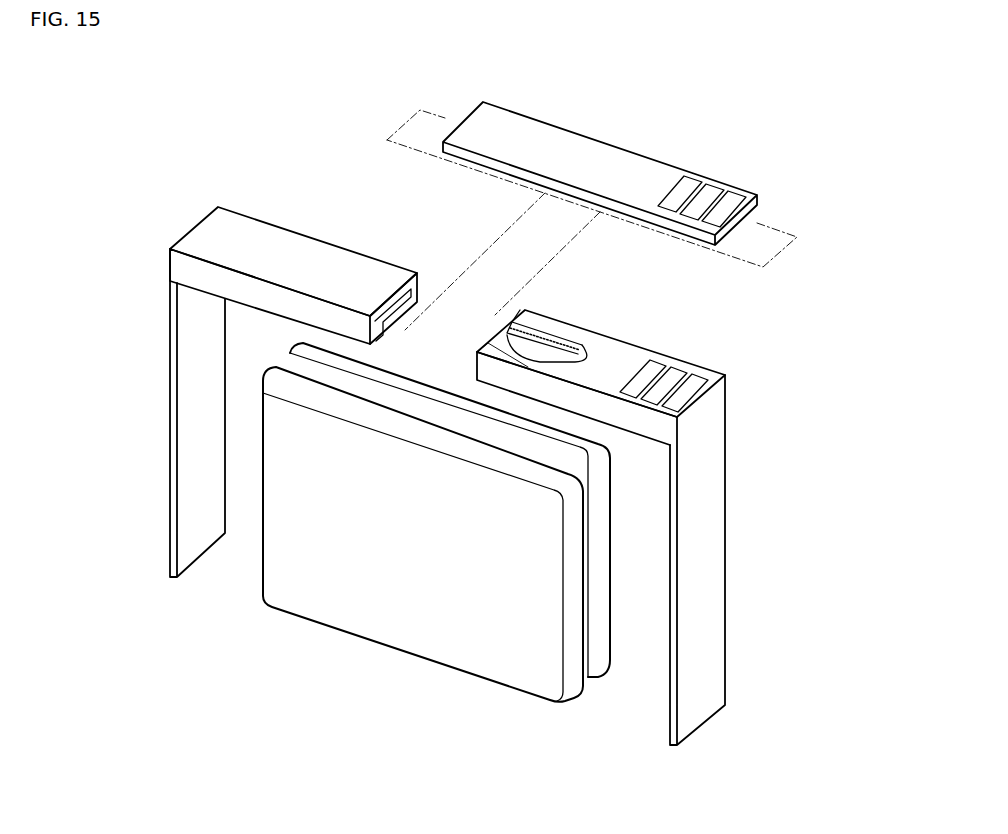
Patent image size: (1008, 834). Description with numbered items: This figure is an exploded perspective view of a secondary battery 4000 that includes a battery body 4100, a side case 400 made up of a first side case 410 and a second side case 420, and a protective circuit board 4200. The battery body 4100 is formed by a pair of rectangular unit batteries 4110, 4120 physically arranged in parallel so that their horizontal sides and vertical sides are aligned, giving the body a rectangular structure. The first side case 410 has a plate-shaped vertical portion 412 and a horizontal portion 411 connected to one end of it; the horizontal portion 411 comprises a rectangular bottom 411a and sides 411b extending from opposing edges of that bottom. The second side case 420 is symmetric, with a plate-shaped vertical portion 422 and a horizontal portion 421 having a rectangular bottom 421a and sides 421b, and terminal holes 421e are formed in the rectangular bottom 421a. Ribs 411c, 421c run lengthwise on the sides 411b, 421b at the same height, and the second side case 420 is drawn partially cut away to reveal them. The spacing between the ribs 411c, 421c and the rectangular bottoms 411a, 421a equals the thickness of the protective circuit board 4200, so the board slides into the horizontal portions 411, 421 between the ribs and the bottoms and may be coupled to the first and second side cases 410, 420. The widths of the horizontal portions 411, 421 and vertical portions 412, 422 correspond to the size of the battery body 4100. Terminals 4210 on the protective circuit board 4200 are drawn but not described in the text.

The secondary battery 4000 is at (191, 85).
The side case 400 is at (829, 350).
The first side case 410 is at (160, 401).
The horizontal portion 411 is at (397, 205).
The rectangular bottom 411a is at (240, 225).
The sides 411b is at (283, 298).
The ribs 411c is at (381, 318).
The vertical portion 412 is at (172, 517).
The second side case 420 is at (745, 488).
The horizontal portion 421 is at (753, 325).
The rectangular bottom 421a is at (542, 325).
The sides 421b is at (602, 402).
The ribs 421c is at (582, 340).
The terminal holes 421e is at (697, 385).
The vertical portion 422 is at (713, 622).
The battery body 4100 is at (563, 782).
The unit battery 4110 is at (510, 665).
The unit battery 4120 is at (602, 667).
The protective circuit board 4200 is at (551, 147).
The board terminals 4210 is at (690, 185).